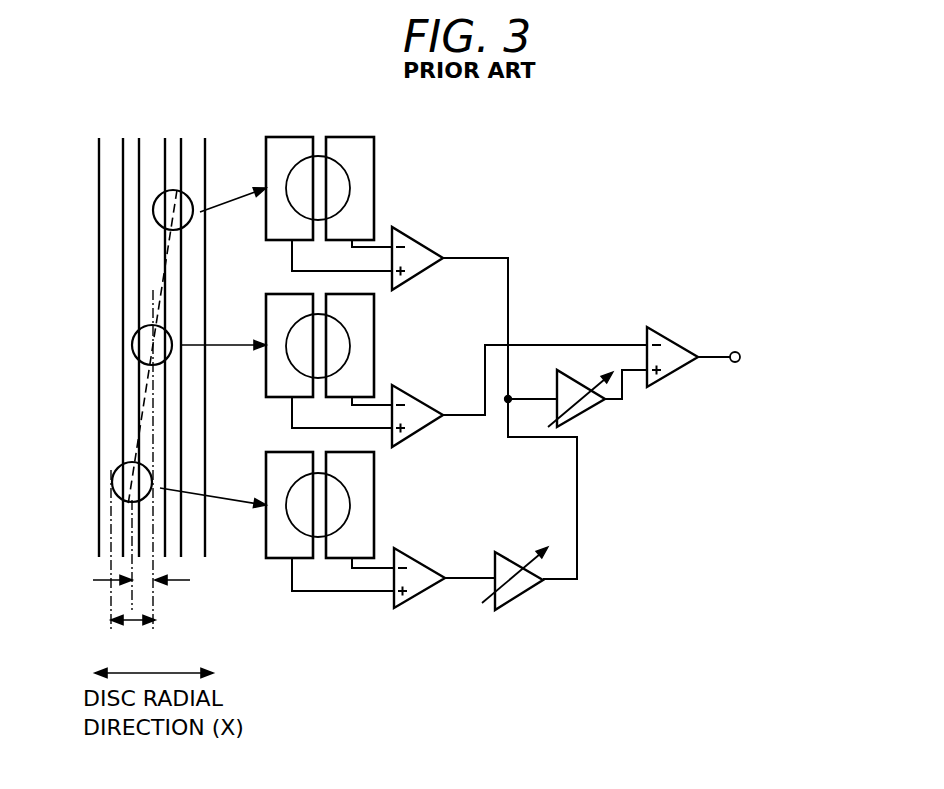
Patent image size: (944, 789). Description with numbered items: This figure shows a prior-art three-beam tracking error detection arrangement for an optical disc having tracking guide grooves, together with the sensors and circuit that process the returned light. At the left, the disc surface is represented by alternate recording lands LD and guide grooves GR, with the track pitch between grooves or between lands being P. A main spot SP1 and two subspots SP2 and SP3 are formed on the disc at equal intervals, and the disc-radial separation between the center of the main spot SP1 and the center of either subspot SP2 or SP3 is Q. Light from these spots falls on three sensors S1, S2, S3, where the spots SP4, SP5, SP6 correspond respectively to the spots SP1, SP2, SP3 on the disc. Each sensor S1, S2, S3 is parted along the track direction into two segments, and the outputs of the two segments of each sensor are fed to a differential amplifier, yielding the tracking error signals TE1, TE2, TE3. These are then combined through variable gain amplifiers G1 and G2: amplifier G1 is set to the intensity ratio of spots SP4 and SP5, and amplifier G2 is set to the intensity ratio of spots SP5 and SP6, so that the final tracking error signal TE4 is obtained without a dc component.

The recording land LD is at (173, 146).
The guide groove GR is at (195, 183).
The disc-radial separation Q is at (141, 591).
The track pitch P is at (133, 631).
The sensor S1 is at (329, 332).
The sensor S2 is at (335, 174).
The sensor S3 is at (331, 490).
The main spot SP1 is at (264, 346).
The subspot SP2 is at (264, 201).
The subspot SP3 is at (264, 506).
The spot on sensor SP4 is at (350, 346).
The spot on sensor SP5 is at (348, 178).
The spot on sensor SP6 is at (350, 505).
The tracking error signal TE1 is at (466, 416).
The tracking error signal TE2 is at (488, 258).
The tracking error signal TE3 is at (455, 580).
The tracking error signal TE4 is at (757, 342).
The variable gain amplifier G1 is at (577, 403).
The variable gain amplifier G2 is at (517, 585).